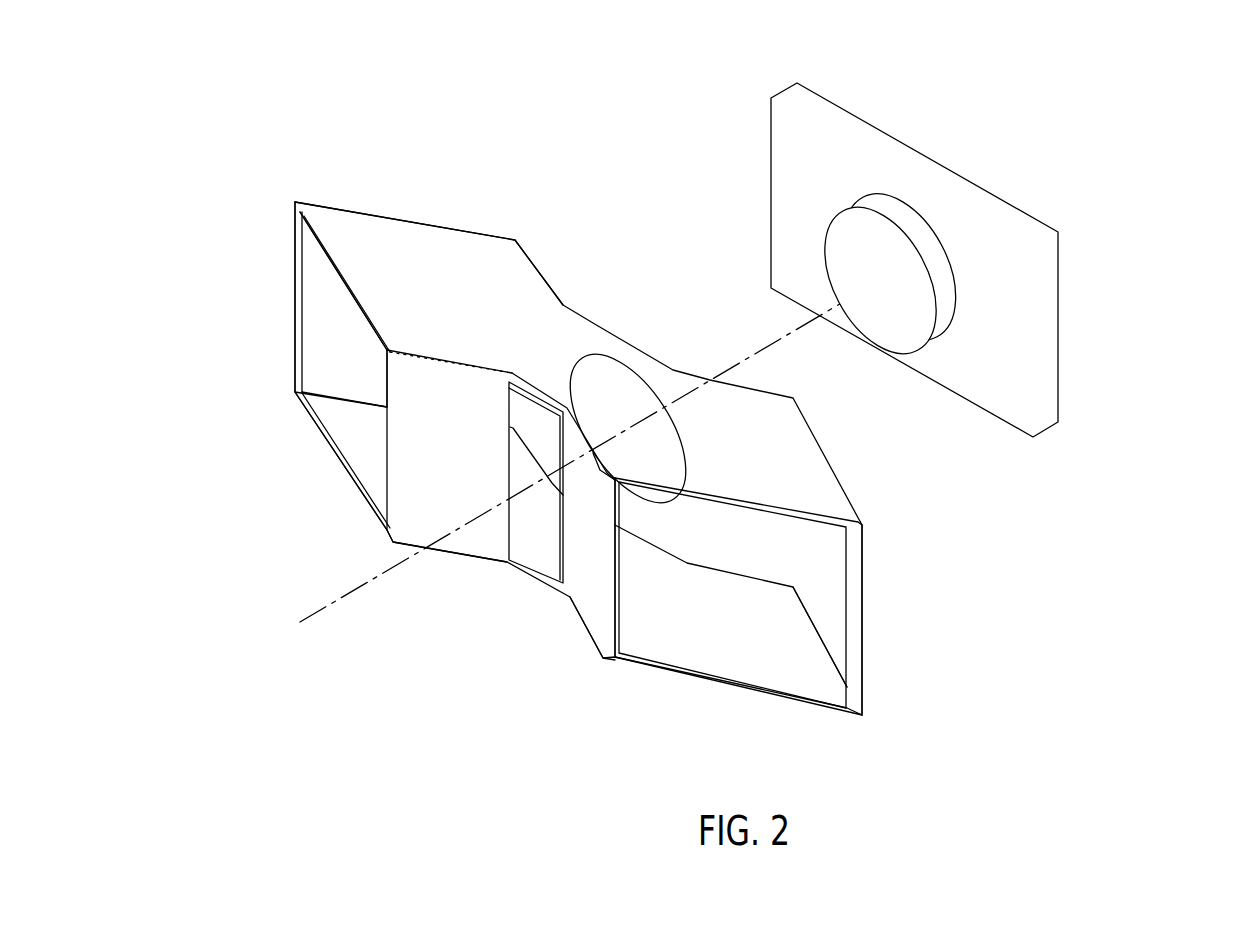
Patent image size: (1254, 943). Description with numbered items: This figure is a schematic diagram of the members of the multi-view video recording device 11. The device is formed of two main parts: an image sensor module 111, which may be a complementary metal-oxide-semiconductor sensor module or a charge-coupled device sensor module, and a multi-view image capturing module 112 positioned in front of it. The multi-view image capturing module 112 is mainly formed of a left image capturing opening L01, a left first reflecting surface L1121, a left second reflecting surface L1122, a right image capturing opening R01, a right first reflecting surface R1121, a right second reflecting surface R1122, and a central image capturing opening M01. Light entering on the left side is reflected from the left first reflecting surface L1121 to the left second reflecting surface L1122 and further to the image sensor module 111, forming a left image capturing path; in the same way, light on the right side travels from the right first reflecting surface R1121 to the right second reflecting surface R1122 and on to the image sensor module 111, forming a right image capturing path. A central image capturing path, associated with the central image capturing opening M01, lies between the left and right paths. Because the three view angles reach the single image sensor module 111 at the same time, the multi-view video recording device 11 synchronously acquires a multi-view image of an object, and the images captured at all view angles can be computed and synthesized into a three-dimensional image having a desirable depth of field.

The multi-view video recording device 11 is at (1118, 173).
The image sensor module 111 is at (1043, 327).
The multi-view image capturing module 112 is at (295, 202).
The left first reflecting surface L1121 is at (428, 247).
The left second reflecting surface L1122 is at (440, 452).
The left image capturing opening L01 is at (350, 432).
The central image capturing opening M01 is at (537, 547).
The right first reflecting surface R1121 is at (832, 593).
The right second reflecting surface R1122 is at (590, 588).
The right image capturing opening R01 is at (753, 655).